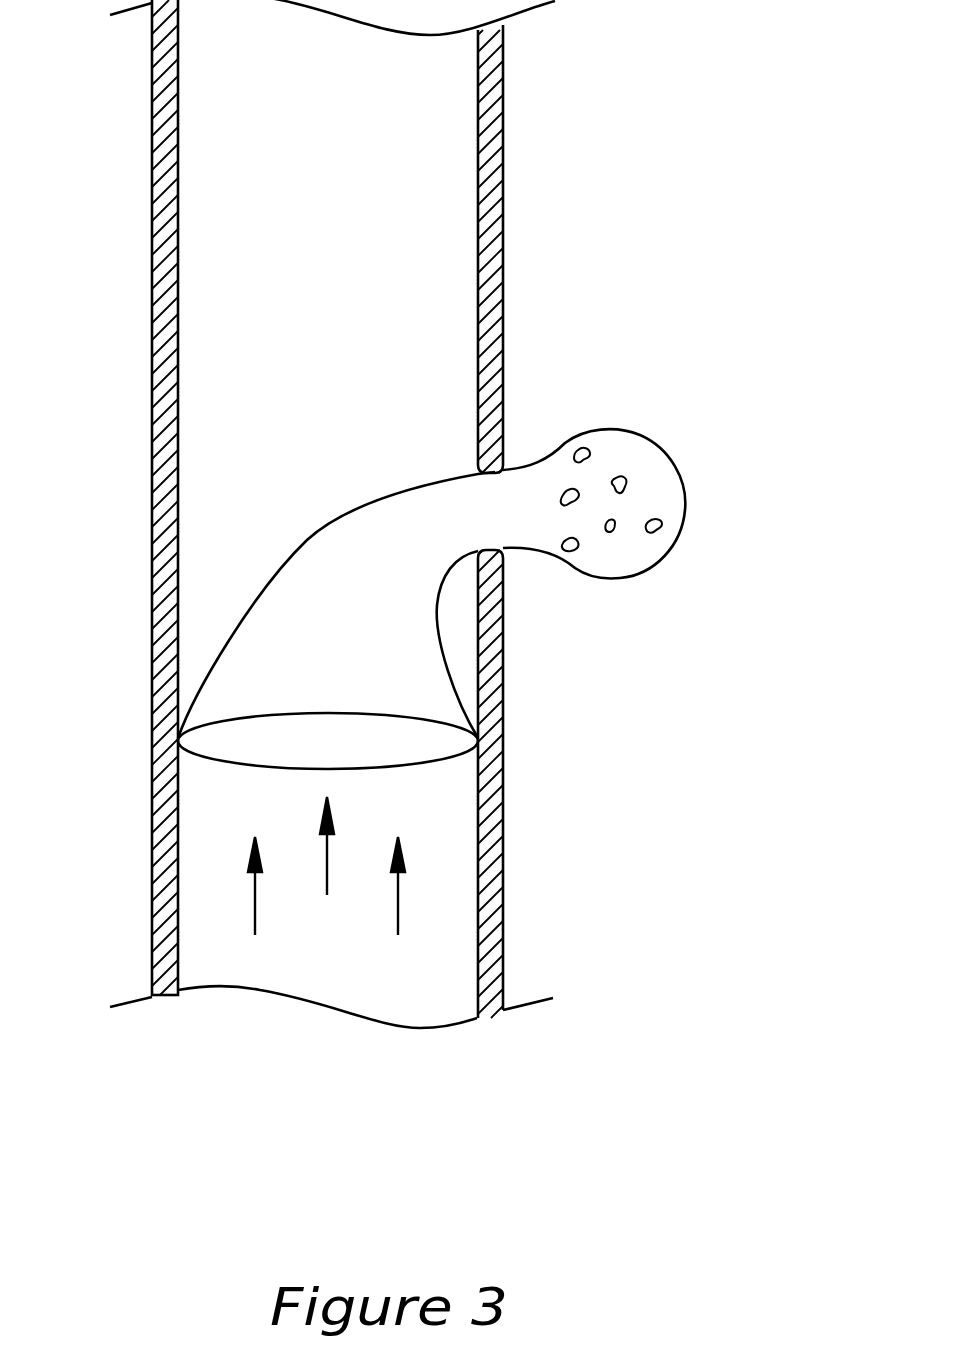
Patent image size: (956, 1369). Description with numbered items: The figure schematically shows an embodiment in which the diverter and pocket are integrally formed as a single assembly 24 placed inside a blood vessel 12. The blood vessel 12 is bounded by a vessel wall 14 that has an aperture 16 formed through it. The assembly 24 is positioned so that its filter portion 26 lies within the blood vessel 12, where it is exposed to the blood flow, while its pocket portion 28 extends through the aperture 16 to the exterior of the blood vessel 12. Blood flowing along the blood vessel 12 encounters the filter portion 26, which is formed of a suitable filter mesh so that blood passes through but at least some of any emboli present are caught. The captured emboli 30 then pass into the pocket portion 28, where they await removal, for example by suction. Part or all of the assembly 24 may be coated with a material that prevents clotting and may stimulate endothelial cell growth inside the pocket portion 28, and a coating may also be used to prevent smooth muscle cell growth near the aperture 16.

The blood vessel 12 is at (566, 166).
The vessel wall 14 is at (498, 695).
The aperture 16 is at (495, 472).
The assembly 24 is at (403, 558).
The filter portion 26 is at (355, 745).
The pocket portion 28 is at (682, 470).
The captured emboli 30 is at (660, 530).